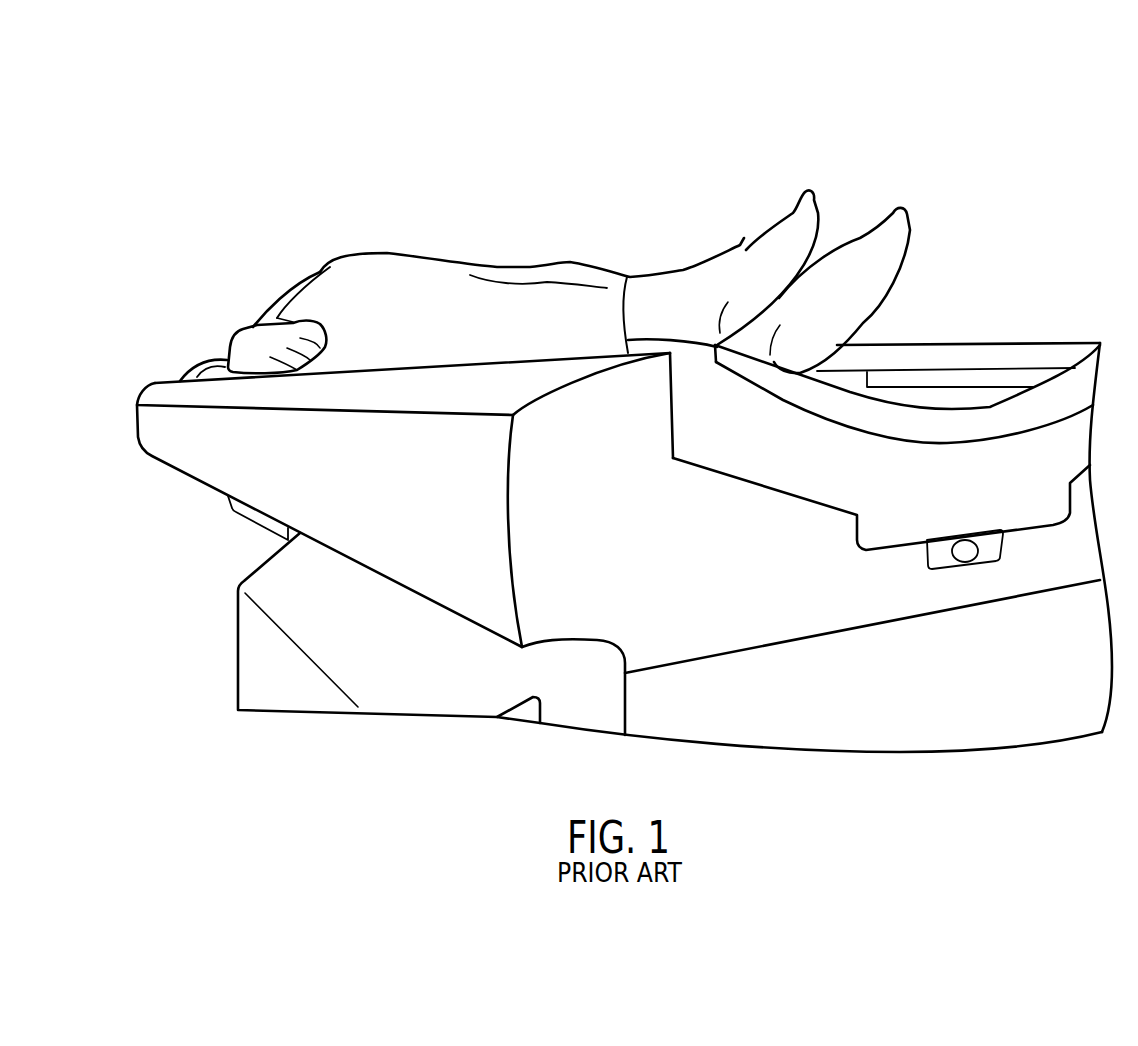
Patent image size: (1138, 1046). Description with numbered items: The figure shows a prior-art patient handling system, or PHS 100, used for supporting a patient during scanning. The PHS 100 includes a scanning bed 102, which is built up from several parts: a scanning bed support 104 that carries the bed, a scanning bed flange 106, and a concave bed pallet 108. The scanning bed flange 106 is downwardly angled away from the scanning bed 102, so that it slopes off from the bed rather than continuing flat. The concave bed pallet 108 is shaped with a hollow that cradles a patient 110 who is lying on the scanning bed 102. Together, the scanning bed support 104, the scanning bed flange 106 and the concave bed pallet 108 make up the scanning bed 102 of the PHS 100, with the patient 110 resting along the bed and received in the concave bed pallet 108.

The PHS 100 is at (1016, 107).
The scanning bed 102 is at (153, 436).
The scanning bed support 104 is at (238, 647).
The scanning bed flange 106 is at (156, 388).
The concave bed pallet 108 is at (960, 397).
The patient 110 is at (447, 257).